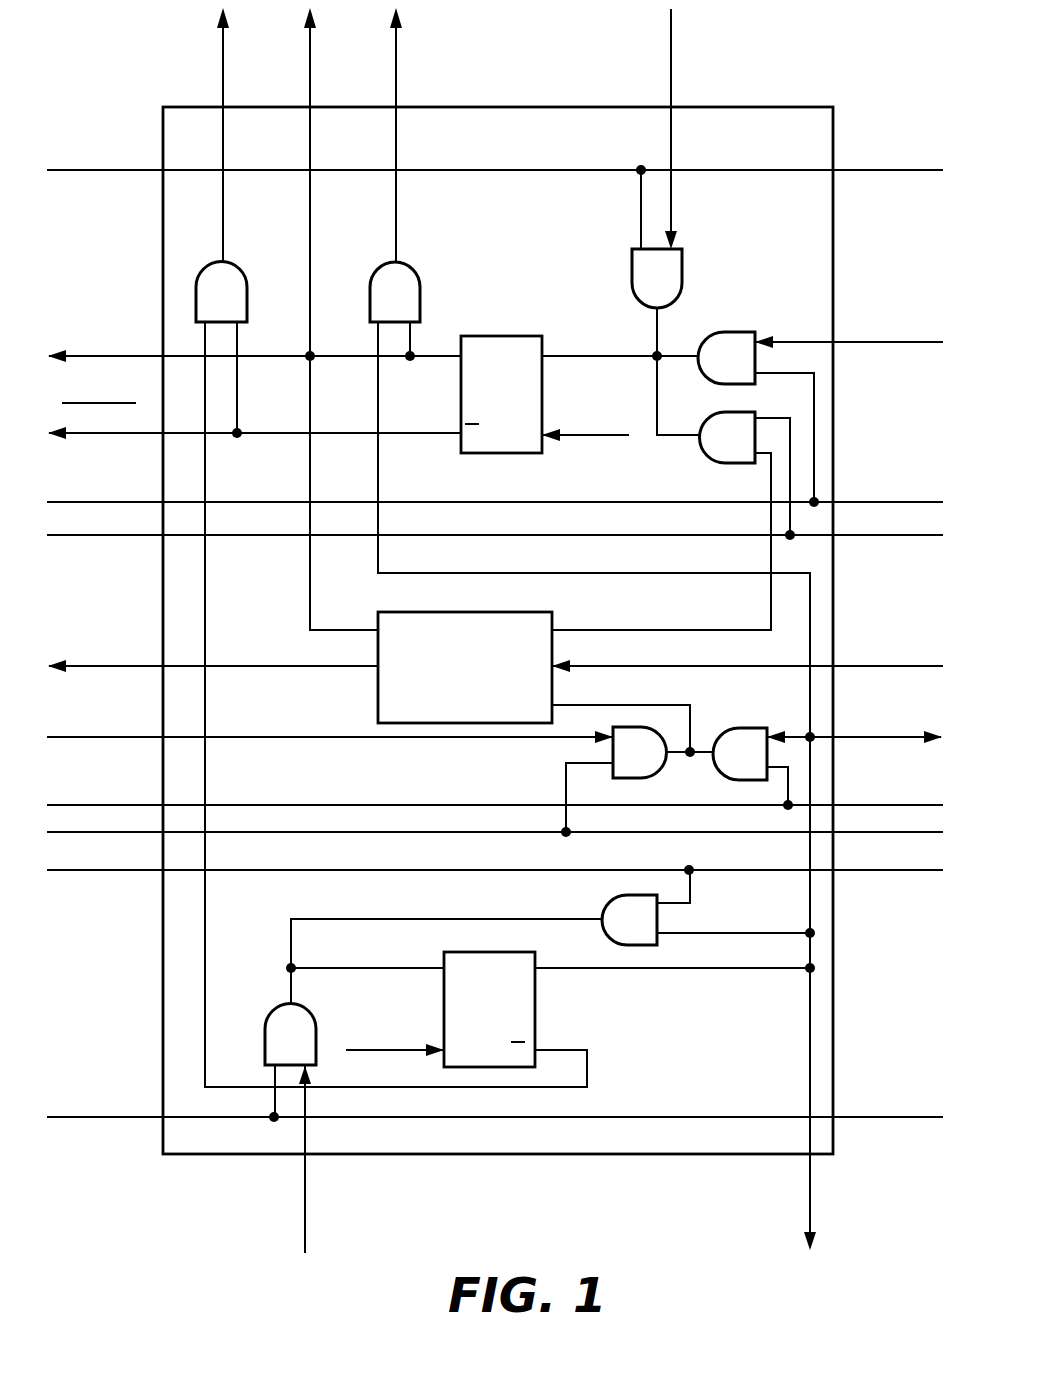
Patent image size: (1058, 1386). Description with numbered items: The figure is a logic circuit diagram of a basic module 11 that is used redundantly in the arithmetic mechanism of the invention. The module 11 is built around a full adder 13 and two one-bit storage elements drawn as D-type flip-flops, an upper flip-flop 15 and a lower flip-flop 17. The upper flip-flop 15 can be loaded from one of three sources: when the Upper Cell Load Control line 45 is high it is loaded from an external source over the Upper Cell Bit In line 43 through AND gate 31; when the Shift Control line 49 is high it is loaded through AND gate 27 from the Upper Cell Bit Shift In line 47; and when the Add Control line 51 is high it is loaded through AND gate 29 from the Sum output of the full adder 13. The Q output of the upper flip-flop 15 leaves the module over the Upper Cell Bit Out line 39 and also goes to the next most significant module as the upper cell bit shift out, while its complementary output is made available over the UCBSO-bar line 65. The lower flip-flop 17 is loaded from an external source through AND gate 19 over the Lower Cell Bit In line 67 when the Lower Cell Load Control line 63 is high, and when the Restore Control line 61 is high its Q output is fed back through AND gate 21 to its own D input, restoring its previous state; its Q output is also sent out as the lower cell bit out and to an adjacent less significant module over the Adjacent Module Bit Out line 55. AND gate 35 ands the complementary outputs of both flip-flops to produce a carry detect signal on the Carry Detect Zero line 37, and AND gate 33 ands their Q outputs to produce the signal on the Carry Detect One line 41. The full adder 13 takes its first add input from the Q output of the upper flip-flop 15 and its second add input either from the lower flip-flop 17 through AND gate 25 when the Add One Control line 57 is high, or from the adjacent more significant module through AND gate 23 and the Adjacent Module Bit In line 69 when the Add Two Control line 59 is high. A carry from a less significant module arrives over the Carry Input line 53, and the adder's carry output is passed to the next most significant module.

The basic module 11 is at (790, 107).
The full adder 13 is at (545, 612).
The upper flip-flop 15 is at (500, 336).
The lower flip-flop 17 is at (536, 1008).
The AND gate 19 is at (280, 1003).
The AND gate 21 is at (620, 895).
The AND gate 23 is at (612, 757).
The AND gate 25 is at (732, 728).
The AND gate 27 is at (735, 332).
The AND gate 29 is at (718, 466).
The AND gate 31 is at (682, 262).
The AND gate 33 is at (405, 262).
The AND gate 35 is at (232, 262).
The Carry Detect Zero (CD0) line 37 is at (224, 60).
The Upper Cell Bit Out (UCBO) line 39 is at (311, 60).
The Carry Detect One (CD1) line 41 is at (397, 60).
The Upper Cell Bit In (UCBI) line 43 is at (672, 66).
The Upper Cell Load Control (UCLK) line 45 is at (130, 170).
The Upper Cell Bit Shift In (UCBSI) line 47 is at (140, 352).
The Shift Control (SK) line 49 is at (130, 500).
The Add Control (AK) line 51 is at (132, 537).
The Carry Input (CAI) line 53 is at (920, 664).
The Adjacent Module Bit Out (ADJMBO) line 55 is at (930, 735).
The Add One Control (AD1K) line 57 is at (136, 803).
The Add Two Control (AD2K) line 59 is at (145, 834).
The Restore Control (RK) line 61 is at (85, 872).
The Lower Cell Load Control (LCLK) line 63 is at (128, 1119).
The UCBSO-bar line / Lower Cell Bit Out (LCBO) line 65 is at (142, 430).
The Lower Cell Bit In (LCBI) line / Carry Output (CAO) line 67 is at (135, 662).
The Adjacent Module Bit In (ADJMBI) line 69 is at (62, 735).